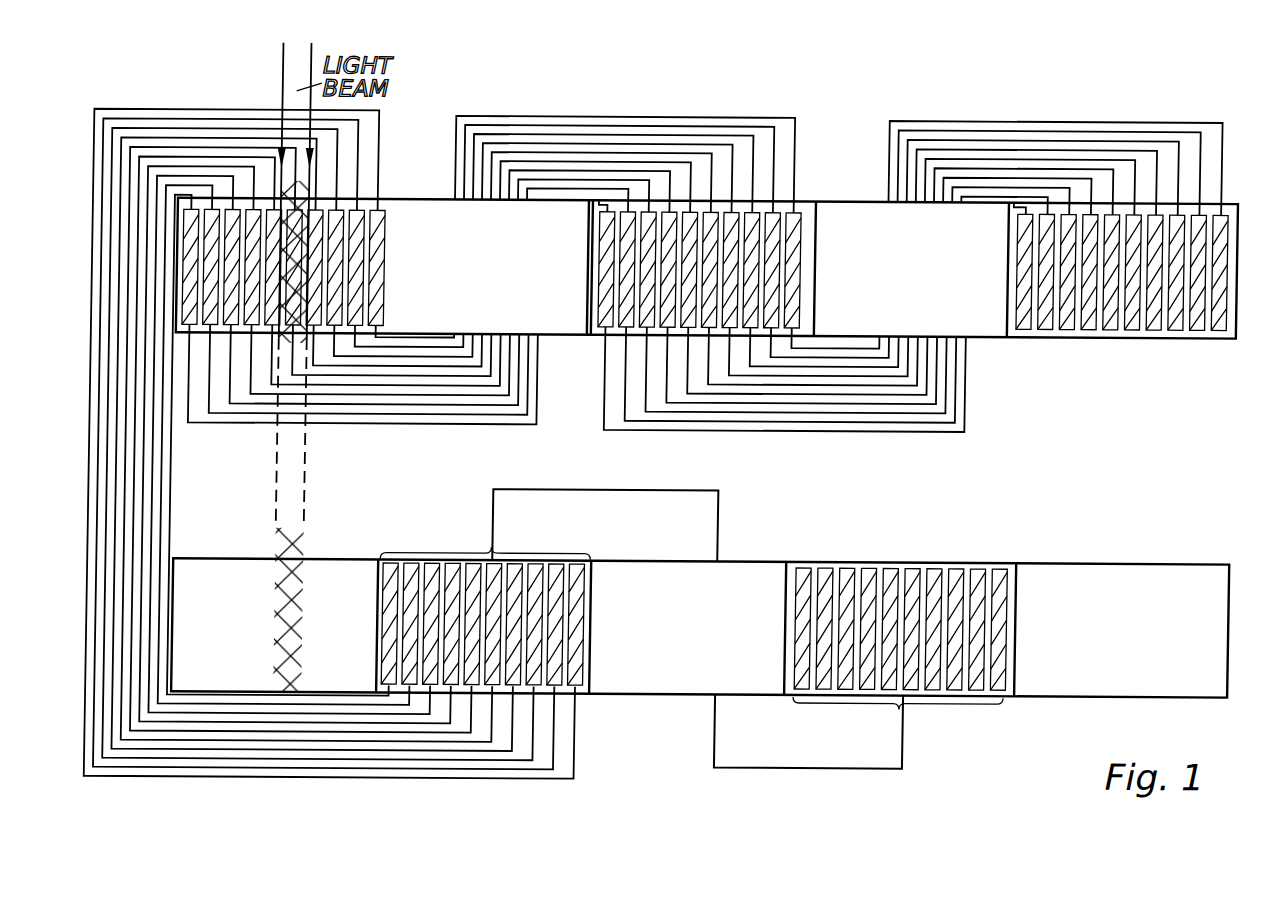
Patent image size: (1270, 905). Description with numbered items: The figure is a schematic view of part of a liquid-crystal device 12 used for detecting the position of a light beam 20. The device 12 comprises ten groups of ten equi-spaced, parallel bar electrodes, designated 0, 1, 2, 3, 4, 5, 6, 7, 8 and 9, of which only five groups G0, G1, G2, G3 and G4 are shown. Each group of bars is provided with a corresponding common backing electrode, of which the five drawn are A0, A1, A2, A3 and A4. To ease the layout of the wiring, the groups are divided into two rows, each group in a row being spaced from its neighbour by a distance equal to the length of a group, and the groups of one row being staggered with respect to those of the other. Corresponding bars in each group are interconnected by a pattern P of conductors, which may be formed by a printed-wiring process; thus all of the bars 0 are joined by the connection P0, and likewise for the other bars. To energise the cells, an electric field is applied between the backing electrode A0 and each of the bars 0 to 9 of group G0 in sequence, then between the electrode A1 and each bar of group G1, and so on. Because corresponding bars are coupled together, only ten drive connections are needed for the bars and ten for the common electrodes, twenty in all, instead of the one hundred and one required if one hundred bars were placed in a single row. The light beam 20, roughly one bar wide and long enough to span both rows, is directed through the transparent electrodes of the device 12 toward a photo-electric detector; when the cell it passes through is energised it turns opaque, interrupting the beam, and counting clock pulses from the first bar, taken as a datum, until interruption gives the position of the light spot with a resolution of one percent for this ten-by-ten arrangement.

The liquid-crystal device 12 is at (1250, 238).
The light beam 20 is at (308, 547).
The pattern of conductors P is at (1035, 120).
The connection P0 is at (538, 420).
The common backing electrode A0 is at (388, 194).
The common backing electrode A1 is at (564, 693).
The common backing electrode A2 is at (803, 199).
The common backing electrode A3 is at (1006, 696).
The common backing electrode A4 is at (1203, 200).
The group of bar electrodes G0 is at (402, 464).
The group of bar electrodes G1 is at (593, 831).
The group of bar electrodes G2 is at (820, 79).
The group of bar electrodes G3 is at (1027, 552).
The group of bar electrodes G4 is at (1237, 459).
The bar electrode 0 is at (1022, 327).
The bar electrode 1 is at (1044, 327).
The bar electrode 2 is at (1065, 327).
The bar electrode 3 is at (1087, 327).
The bar electrode 4 is at (1109, 327).
The bar electrode 5 is at (1130, 327).
The bar electrode 6 is at (1152, 327).
The bar electrode 7 is at (1174, 327).
The bar electrode 8 is at (1196, 327).
The bar electrode 9 is at (1217, 327).